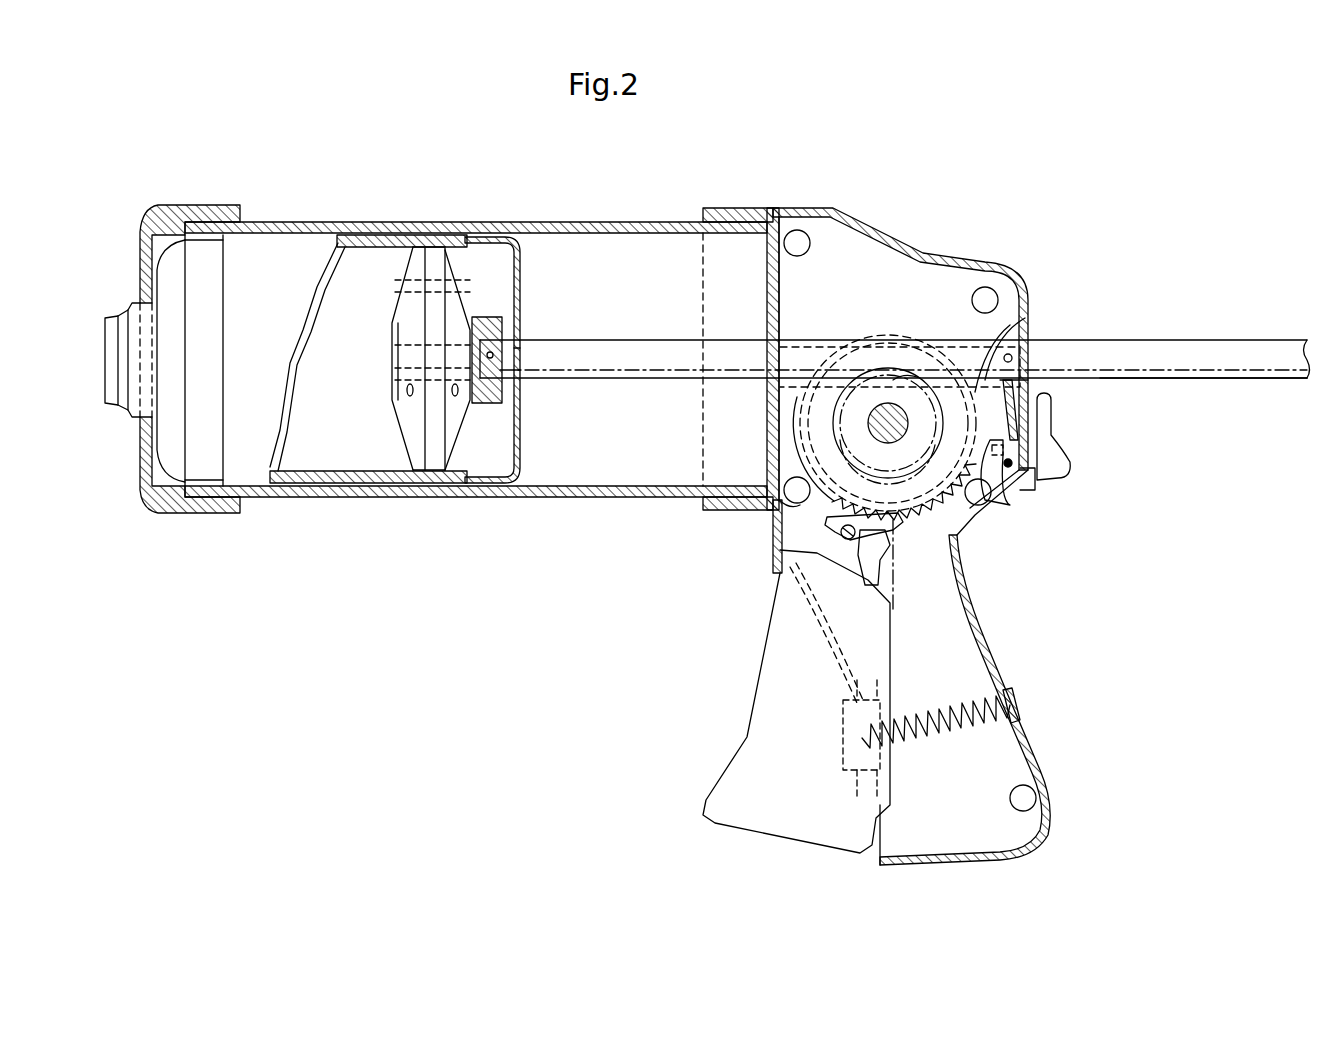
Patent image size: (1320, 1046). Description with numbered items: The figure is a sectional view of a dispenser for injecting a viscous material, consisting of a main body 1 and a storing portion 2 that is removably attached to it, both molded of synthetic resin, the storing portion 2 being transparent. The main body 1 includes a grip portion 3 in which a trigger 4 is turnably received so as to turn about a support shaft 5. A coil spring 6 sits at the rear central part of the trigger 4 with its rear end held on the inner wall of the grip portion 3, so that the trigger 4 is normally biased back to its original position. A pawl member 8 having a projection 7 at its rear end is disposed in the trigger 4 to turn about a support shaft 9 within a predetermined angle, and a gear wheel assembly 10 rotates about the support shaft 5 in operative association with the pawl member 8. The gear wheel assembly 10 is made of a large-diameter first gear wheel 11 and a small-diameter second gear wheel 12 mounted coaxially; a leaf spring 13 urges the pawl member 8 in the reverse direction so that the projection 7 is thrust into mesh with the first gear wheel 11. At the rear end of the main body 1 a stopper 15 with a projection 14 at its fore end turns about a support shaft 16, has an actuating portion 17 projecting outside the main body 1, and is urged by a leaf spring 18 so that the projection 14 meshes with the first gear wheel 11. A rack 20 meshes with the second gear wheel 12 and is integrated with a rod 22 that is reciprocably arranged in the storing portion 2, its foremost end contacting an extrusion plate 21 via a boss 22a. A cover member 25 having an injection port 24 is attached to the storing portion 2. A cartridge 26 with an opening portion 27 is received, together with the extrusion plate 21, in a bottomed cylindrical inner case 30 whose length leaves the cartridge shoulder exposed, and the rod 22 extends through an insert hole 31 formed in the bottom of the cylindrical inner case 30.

The main body 1 is at (1013, 255).
The storing portion 2 is at (443, 498).
The grip portion 3 is at (1048, 741).
The trigger 4 is at (750, 737).
The support shaft 5 is at (880, 415).
The coil spring 6 is at (997, 700).
The projection 7 is at (963, 532).
The pawl member 8 is at (847, 530).
The support shaft 9 is at (847, 537).
The gear wheel assembly 10 is at (878, 328).
The first gear wheel 11 is at (1005, 495).
The second gear wheel 12 is at (900, 385).
The leaf spring 13 is at (877, 555).
The projection 14 is at (1000, 360).
The stopper 15 is at (1003, 413).
The support shaft 16 is at (1035, 480).
The actuating portion 17 is at (1045, 435).
The leaf spring 18 is at (1010, 352).
The rack 20 is at (1205, 379).
The extrusion plate 21 is at (470, 300).
The rod 22 is at (1195, 340).
The boss 22a is at (493, 315).
The injection port 24 is at (140, 432).
The cover member 25 is at (153, 227).
The cartridge 26 is at (330, 445).
The opening portion 27 is at (103, 312).
The cylindrical inner case 30 is at (527, 433).
The insert hole 31 is at (523, 387).